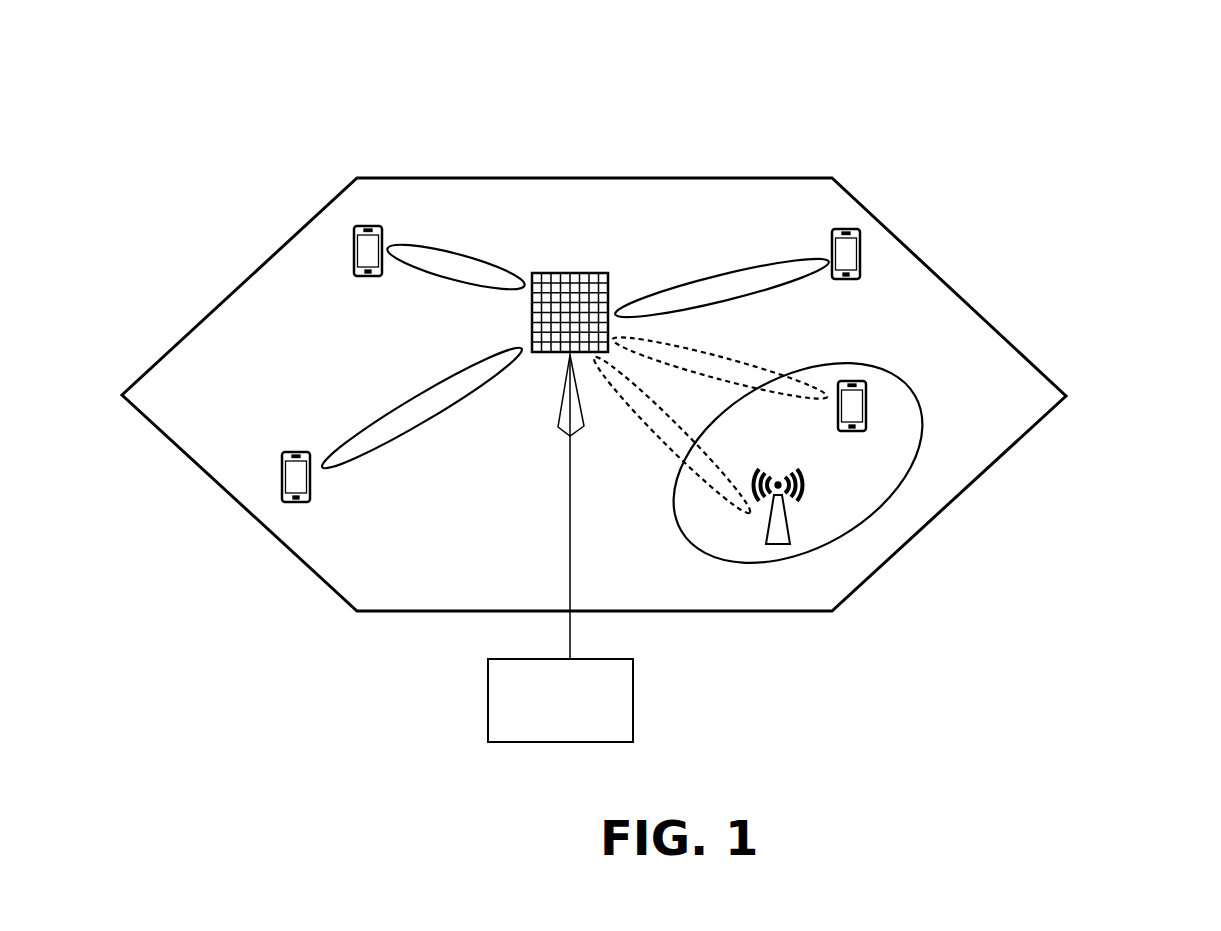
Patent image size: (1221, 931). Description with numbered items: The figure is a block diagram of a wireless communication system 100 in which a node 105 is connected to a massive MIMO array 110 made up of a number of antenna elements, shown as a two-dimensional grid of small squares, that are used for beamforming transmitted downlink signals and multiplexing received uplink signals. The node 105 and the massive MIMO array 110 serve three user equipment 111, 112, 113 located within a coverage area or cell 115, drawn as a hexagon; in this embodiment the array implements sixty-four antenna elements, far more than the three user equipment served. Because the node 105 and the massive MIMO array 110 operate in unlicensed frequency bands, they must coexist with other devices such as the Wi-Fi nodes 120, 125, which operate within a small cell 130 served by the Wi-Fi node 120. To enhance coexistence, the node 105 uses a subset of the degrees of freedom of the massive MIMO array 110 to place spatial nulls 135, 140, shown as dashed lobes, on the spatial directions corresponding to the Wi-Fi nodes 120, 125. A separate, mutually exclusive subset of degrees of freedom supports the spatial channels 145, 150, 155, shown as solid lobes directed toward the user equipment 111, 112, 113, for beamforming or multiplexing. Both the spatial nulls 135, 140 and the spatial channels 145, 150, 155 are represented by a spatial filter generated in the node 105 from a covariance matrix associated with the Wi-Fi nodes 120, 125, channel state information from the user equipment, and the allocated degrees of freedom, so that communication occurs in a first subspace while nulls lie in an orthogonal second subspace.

The wireless communication system 100 is at (1116, 83).
The node 105 is at (546, 722).
The massive MIMO array 110 is at (571, 273).
The user equipment 111 is at (370, 279).
The user equipment 112 is at (297, 452).
The user equipment 113 is at (846, 281).
The coverage area or cell 115 is at (946, 283).
The Wi-Fi node 120 is at (773, 547).
The Wi-Fi node 125 is at (867, 398).
The small cell 130 is at (935, 425).
The spatial null 135 is at (663, 443).
The spatial null 140 is at (717, 355).
The spatial channel 145 is at (473, 283).
The spatial channel 150 is at (410, 428).
The spatial channel 155 is at (732, 272).